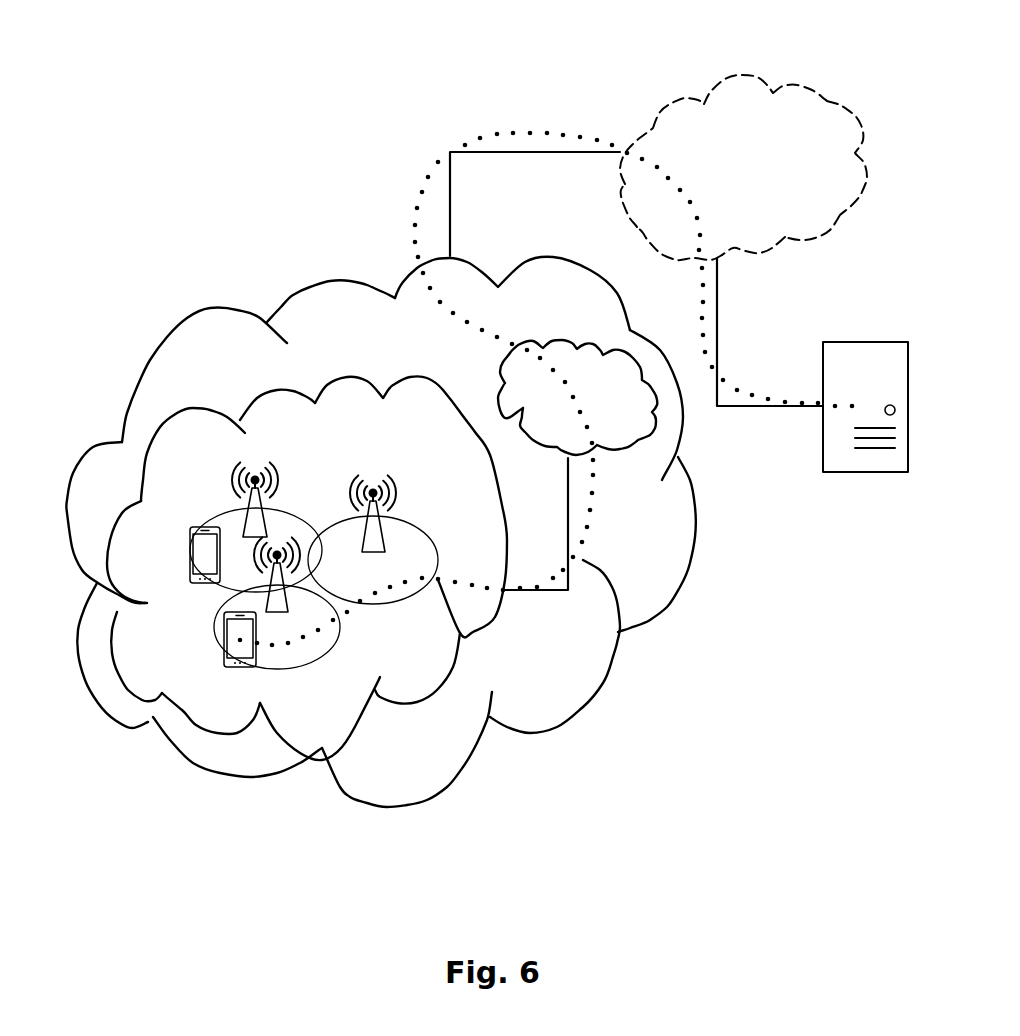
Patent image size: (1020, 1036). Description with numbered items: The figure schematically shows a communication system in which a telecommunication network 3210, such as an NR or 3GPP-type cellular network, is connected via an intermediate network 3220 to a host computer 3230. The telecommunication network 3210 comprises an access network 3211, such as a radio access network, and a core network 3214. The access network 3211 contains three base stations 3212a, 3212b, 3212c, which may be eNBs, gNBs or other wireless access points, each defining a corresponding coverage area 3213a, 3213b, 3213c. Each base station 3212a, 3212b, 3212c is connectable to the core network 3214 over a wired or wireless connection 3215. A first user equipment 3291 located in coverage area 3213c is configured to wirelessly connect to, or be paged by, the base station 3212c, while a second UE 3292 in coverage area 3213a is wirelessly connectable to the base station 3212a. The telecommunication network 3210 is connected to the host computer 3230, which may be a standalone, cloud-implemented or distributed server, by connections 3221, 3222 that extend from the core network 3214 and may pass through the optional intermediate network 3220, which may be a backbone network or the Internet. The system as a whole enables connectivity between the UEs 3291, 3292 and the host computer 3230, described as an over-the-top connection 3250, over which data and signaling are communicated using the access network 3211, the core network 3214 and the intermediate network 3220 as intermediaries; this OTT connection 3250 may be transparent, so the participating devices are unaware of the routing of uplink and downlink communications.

The telecommunication network 3210 is at (407, 328).
The access network 3211 is at (360, 439).
The base station 3212a is at (288, 603).
The base station 3212b is at (385, 491).
The base station 3212c is at (233, 480).
The coverage area 3213a is at (340, 620).
The coverage area 3213b is at (439, 563).
The coverage area 3213c is at (213, 520).
The core network 3214 is at (650, 411).
The connection 3215 is at (570, 502).
The intermediate network 3220 is at (768, 177).
The connection 3221 is at (535, 152).
The connection 3222 is at (773, 407).
The host computer 3230 is at (865, 423).
The over-the-top (OTT) connection 3250 is at (427, 177).
The first user equipment (UE) 3291 is at (190, 577).
The second UE 3292 is at (223, 657).